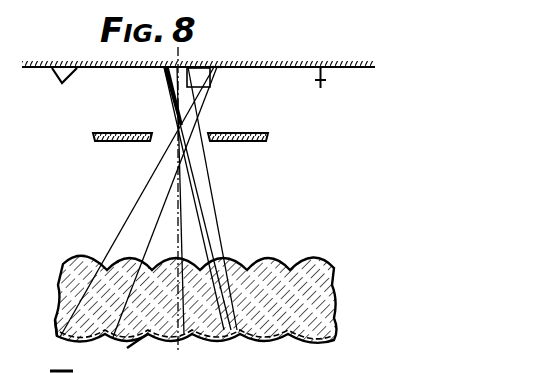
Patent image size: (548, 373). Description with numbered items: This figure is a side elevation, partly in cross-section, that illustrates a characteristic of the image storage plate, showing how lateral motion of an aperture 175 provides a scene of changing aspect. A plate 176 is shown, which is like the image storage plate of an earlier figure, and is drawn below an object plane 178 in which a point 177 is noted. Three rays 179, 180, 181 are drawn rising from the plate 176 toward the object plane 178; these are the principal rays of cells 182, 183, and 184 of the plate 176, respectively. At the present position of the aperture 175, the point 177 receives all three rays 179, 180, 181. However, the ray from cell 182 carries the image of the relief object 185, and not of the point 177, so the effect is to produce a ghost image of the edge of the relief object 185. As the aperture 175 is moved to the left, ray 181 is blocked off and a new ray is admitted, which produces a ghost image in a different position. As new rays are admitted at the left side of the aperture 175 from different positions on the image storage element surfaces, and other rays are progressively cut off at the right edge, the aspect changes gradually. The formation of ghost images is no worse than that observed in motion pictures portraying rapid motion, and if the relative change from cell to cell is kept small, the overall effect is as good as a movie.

The aperture 175 is at (152, 132).
The plate 176 is at (319, 259).
The point 177 is at (220, 68).
The object plane 178 is at (346, 69).
The ray 179 is at (148, 184).
The ray 180 is at (158, 217).
The ray 181 is at (185, 237).
The cell 182 is at (70, 339).
The cell 183 is at (143, 339).
The cell 184 is at (195, 342).
The relief object 185 is at (213, 88).